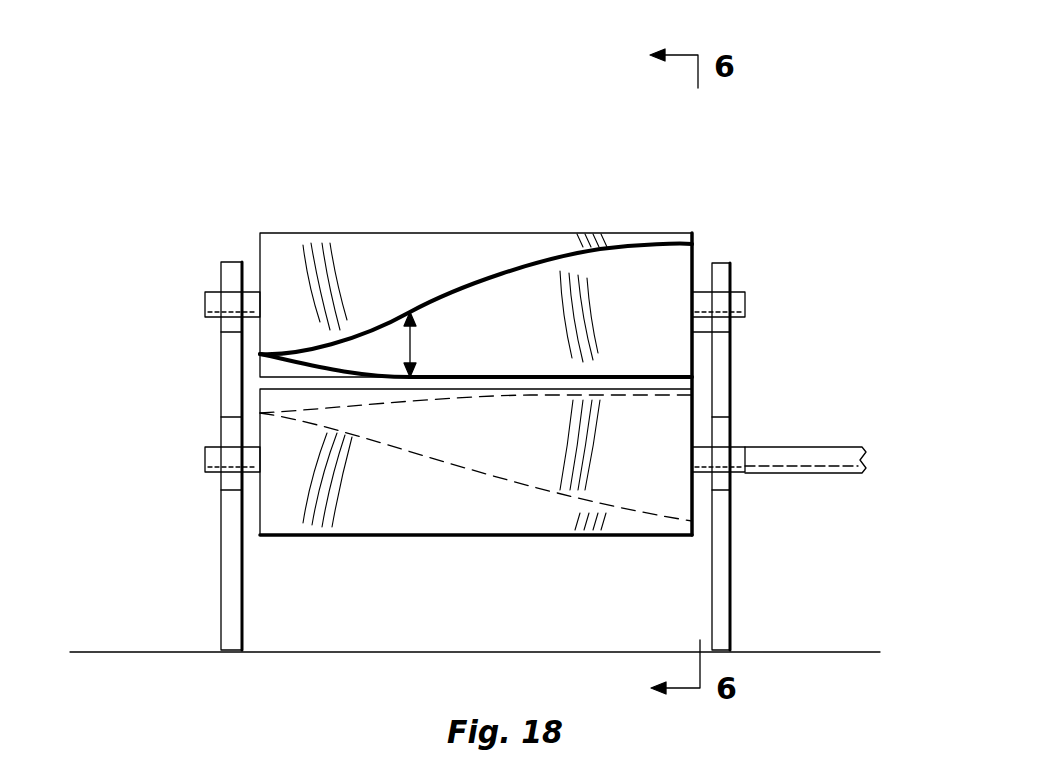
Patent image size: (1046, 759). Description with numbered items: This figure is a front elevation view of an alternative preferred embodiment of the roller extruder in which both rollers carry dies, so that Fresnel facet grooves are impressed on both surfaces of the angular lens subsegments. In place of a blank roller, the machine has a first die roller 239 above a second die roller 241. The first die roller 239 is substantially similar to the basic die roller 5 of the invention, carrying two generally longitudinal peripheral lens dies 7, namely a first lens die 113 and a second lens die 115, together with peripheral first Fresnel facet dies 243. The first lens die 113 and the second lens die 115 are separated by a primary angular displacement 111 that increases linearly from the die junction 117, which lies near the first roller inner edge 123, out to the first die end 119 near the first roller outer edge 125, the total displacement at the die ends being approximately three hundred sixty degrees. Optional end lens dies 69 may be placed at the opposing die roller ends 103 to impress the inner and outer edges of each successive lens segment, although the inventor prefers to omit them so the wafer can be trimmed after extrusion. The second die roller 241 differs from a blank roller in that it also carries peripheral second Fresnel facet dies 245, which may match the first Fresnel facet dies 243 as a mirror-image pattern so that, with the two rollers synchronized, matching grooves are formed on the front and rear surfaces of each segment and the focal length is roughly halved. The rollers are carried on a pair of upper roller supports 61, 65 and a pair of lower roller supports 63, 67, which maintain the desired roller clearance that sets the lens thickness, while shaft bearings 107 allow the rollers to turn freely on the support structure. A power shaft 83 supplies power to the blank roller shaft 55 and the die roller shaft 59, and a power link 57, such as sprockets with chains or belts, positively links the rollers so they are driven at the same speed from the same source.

The die roller 5 is at (300, 233).
The peripheral lens dies 7 is at (483, 377).
The blank roller shaft 55 is at (700, 474).
The power link 57 is at (722, 397).
The die roller shaft 59 is at (695, 256).
The upper roller support 61 is at (220, 385).
The lower roller support 63 is at (222, 590).
The upper roller support 65 is at (725, 353).
The lower roller support 67 is at (720, 578).
The end lens dies 69 is at (260, 249).
The power shaft 83 is at (800, 457).
The die roller ends 103 is at (260, 243).
The shaft bearings 107 is at (702, 297).
The primary angular displacement 111 is at (410, 343).
The first lens die 113 is at (518, 268).
The second lens die 115 is at (307, 368).
The die junction 117 is at (262, 356).
The first die end 119 is at (692, 247).
The first roller inner edge 123 is at (260, 254).
The first roller outer edge 125 is at (705, 333).
The first die roller 239 is at (627, 236).
The second die roller 241 is at (405, 537).
The first Fresnel facet dies 243 is at (560, 297).
The second Fresnel facet dies 245 is at (563, 443).